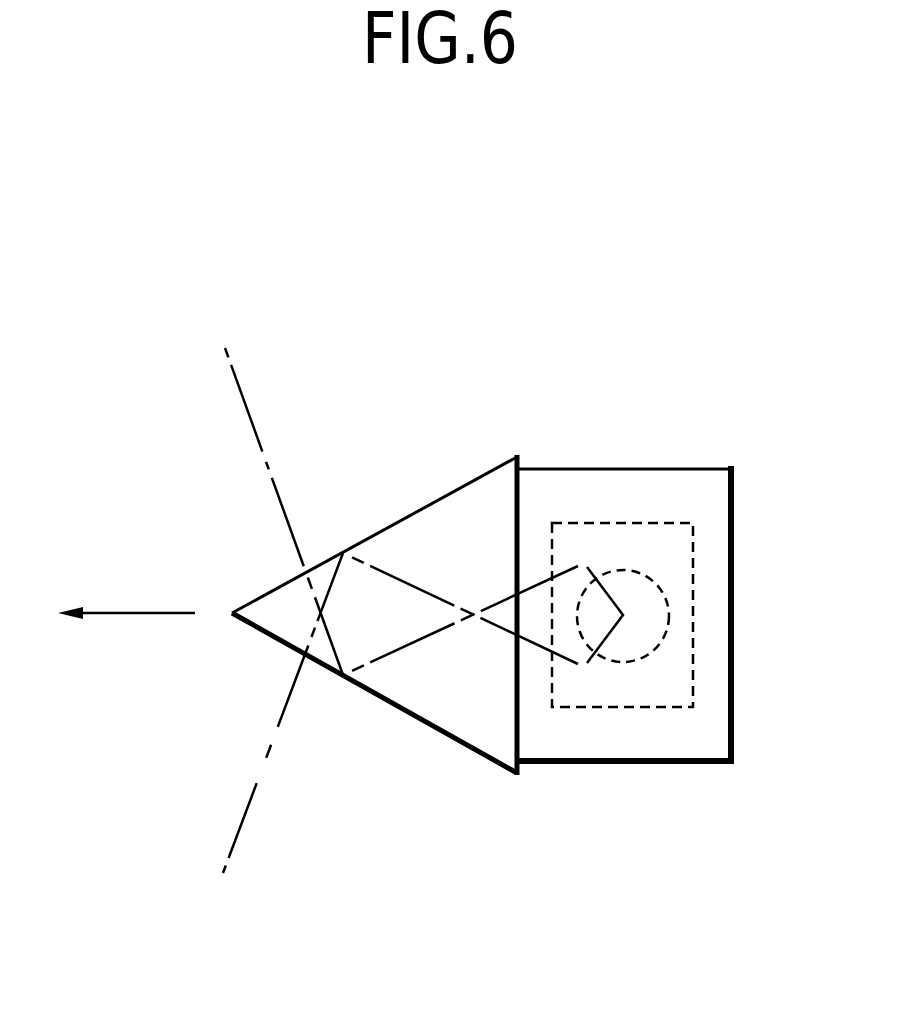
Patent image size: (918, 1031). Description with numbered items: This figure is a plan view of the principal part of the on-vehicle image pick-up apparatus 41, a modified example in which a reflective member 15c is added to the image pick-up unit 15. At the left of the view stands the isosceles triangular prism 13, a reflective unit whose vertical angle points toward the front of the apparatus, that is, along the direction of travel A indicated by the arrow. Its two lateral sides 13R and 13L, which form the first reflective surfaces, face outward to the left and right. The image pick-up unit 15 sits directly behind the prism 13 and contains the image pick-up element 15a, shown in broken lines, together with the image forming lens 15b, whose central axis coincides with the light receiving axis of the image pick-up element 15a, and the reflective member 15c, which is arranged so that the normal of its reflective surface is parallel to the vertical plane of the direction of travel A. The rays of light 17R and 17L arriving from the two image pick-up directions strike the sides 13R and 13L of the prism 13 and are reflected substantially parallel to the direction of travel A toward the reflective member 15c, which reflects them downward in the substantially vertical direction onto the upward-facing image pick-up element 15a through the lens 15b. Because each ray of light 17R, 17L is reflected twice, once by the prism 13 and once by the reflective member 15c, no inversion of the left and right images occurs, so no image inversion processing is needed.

The prism 13 is at (374, 578).
The right lateral side of the prism 13R is at (372, 537).
The left lateral side of the prism 13L is at (378, 697).
The image pick-up unit 15 is at (672, 529).
The image pick-up element 15a is at (692, 685).
The image forming lens 15b is at (670, 613).
The reflective member 15c is at (687, 467).
The right ray of light 17R is at (255, 432).
The left ray of light 17L is at (253, 793).
The on-vehicle image pick-up apparatus 41 is at (720, 338).
The direction of travel A is at (138, 615).